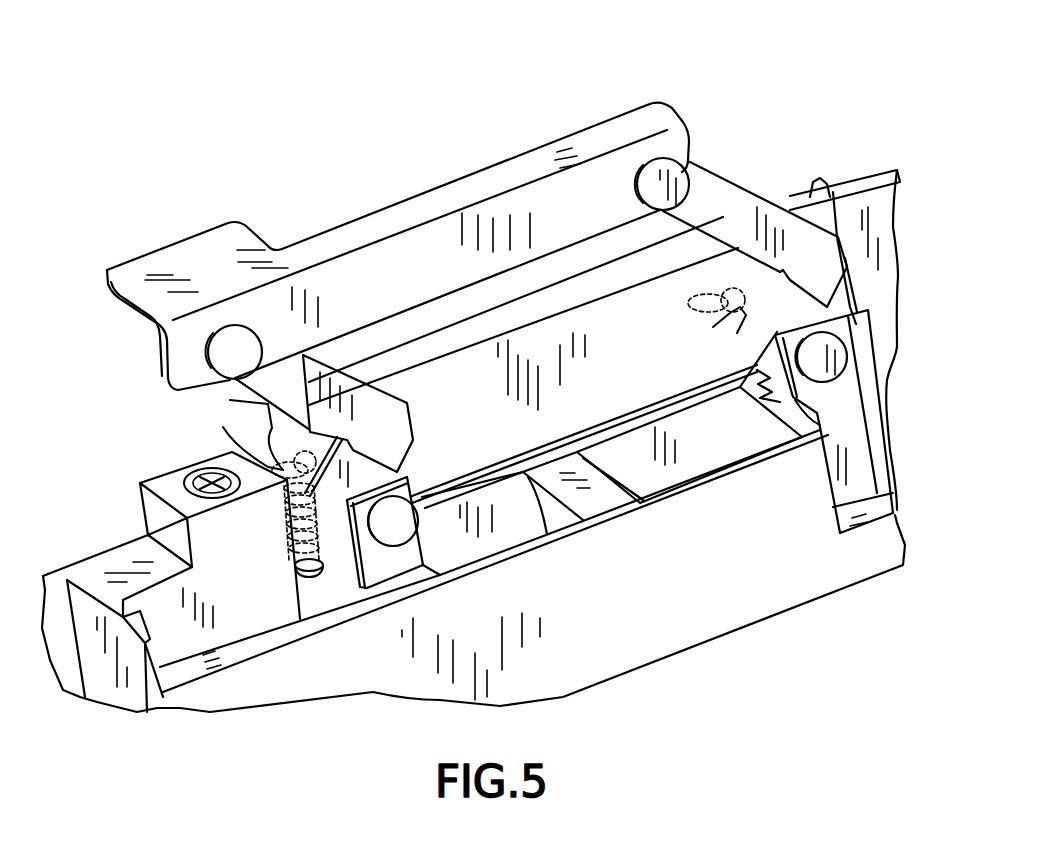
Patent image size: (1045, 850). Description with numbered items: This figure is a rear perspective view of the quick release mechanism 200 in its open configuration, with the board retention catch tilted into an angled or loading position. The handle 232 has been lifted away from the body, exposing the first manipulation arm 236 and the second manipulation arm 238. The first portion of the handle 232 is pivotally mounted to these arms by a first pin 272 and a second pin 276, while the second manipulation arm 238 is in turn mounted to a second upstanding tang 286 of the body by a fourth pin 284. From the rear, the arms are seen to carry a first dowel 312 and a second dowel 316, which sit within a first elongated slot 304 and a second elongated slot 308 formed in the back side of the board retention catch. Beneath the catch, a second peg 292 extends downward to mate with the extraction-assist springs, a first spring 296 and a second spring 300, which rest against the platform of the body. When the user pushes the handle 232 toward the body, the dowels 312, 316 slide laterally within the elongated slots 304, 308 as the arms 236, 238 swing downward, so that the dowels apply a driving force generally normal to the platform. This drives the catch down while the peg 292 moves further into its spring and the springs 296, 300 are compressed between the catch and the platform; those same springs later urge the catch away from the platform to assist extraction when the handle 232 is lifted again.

The quick release mechanism 200 is at (473, 441).
The handle 232 is at (200, 258).
The first manipulation arm 236 is at (755, 197).
The second manipulation arm 238 is at (357, 387).
The first pin 272 is at (235, 353).
The second pin 276 is at (663, 183).
The fourth pin 284 is at (828, 358).
The second upstanding tang 286 is at (860, 323).
The second peg 292 is at (290, 555).
The first spring 296 is at (820, 415).
The second spring 300 is at (315, 577).
The first elongated slot 304 is at (730, 315).
The second elongated slot 308 is at (225, 463).
The first dowel 312 is at (737, 300).
The second dowel 316 is at (223, 428).